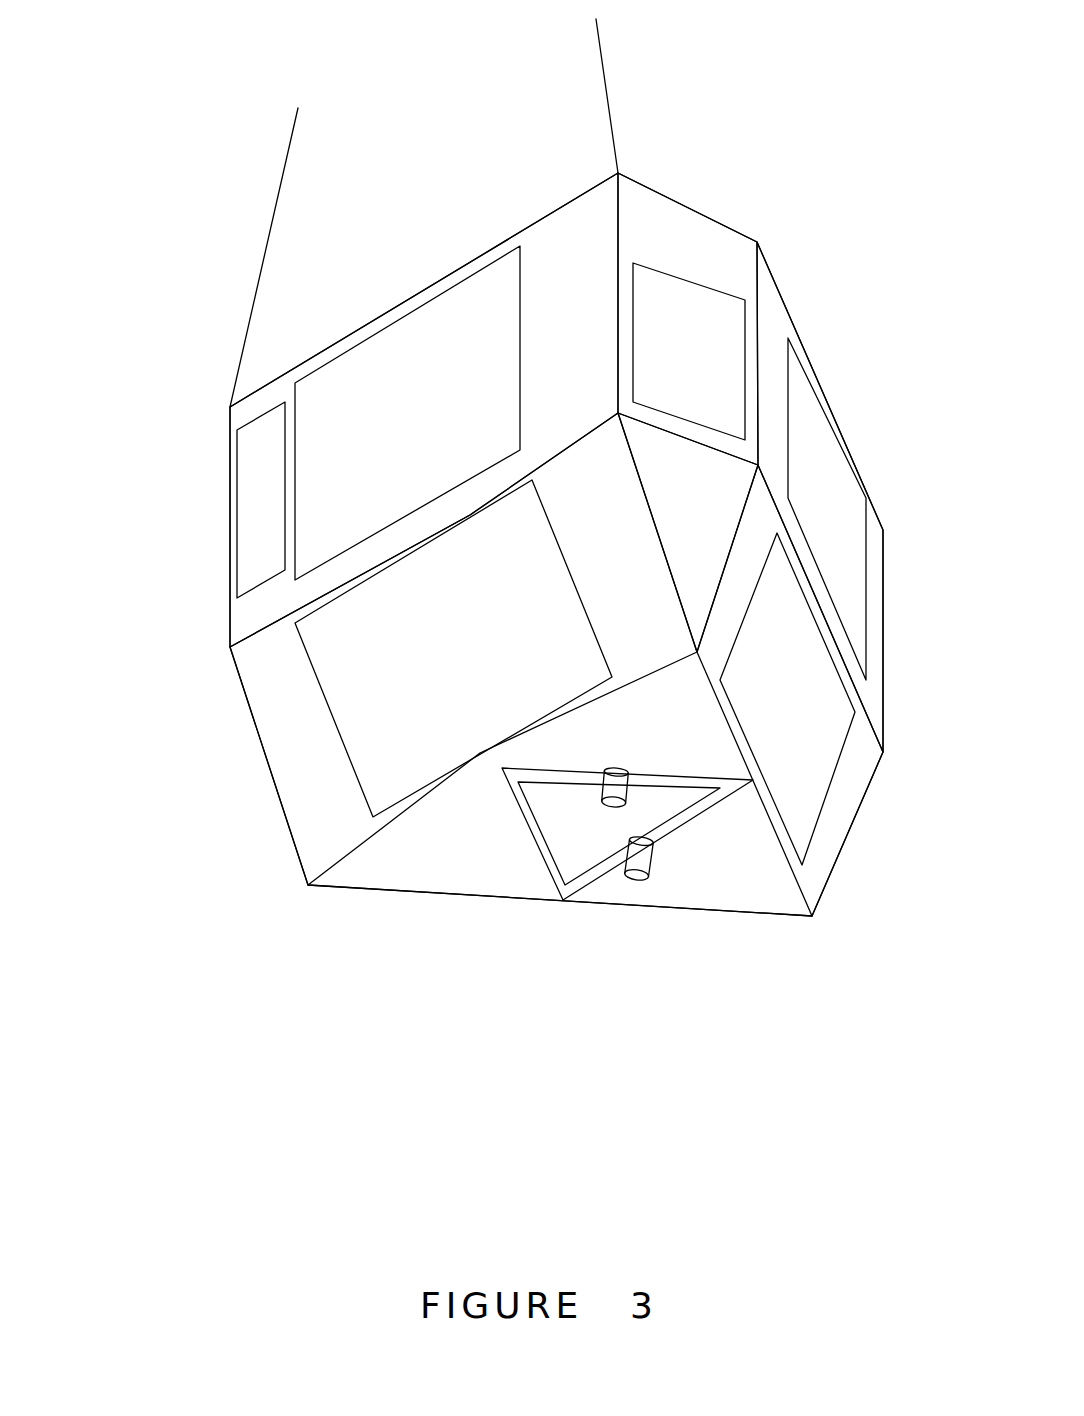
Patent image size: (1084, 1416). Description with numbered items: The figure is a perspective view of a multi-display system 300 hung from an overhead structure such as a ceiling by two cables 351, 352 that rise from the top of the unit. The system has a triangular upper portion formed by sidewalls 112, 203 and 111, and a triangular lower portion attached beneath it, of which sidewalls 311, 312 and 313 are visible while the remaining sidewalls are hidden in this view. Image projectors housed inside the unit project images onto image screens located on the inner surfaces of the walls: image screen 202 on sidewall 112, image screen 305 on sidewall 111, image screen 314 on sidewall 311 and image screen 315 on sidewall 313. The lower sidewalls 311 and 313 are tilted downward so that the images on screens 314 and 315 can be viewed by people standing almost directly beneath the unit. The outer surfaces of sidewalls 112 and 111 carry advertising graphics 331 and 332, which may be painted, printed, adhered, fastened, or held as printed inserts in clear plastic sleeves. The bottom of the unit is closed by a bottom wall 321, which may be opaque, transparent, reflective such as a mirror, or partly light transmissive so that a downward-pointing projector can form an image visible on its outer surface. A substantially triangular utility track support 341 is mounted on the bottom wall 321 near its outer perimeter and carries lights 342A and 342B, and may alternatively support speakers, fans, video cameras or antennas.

The multi-display system 300 is at (190, 1080).
The sidewall 111 is at (770, 320).
The sidewall 112 is at (538, 248).
The image screen 202 is at (425, 466).
The sidewall 203 is at (728, 258).
The image screen 305 is at (842, 513).
The sidewall 311 is at (278, 723).
The sidewall 312 is at (710, 511).
The sidewall 313 is at (845, 793).
The image screen 314 is at (440, 664).
The image screen 315 is at (808, 710).
The bottom wall 321 is at (382, 872).
The advertising graphics 331 is at (265, 473).
The advertising graphics 332 is at (712, 358).
The utility track support 341 is at (601, 880).
The light 342A is at (620, 766).
The light 342B is at (652, 862).
The cable 351 is at (282, 172).
The cable 352 is at (600, 43).